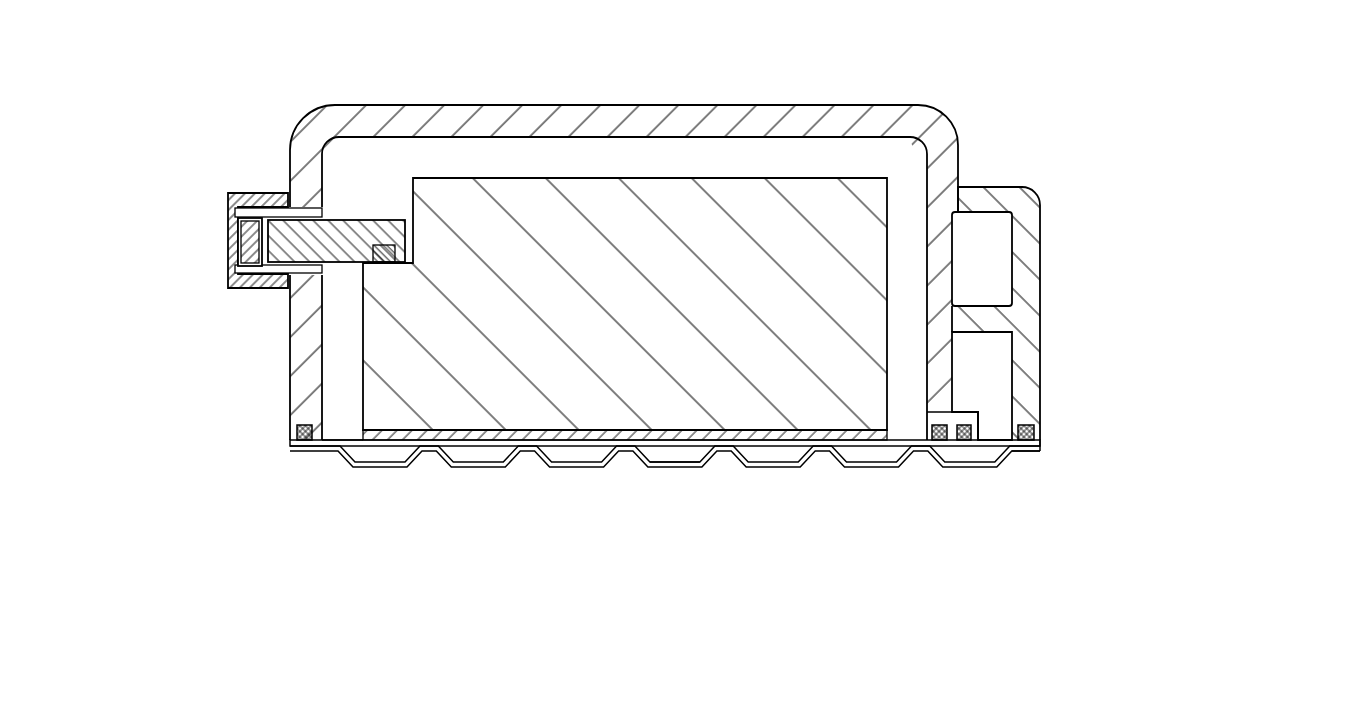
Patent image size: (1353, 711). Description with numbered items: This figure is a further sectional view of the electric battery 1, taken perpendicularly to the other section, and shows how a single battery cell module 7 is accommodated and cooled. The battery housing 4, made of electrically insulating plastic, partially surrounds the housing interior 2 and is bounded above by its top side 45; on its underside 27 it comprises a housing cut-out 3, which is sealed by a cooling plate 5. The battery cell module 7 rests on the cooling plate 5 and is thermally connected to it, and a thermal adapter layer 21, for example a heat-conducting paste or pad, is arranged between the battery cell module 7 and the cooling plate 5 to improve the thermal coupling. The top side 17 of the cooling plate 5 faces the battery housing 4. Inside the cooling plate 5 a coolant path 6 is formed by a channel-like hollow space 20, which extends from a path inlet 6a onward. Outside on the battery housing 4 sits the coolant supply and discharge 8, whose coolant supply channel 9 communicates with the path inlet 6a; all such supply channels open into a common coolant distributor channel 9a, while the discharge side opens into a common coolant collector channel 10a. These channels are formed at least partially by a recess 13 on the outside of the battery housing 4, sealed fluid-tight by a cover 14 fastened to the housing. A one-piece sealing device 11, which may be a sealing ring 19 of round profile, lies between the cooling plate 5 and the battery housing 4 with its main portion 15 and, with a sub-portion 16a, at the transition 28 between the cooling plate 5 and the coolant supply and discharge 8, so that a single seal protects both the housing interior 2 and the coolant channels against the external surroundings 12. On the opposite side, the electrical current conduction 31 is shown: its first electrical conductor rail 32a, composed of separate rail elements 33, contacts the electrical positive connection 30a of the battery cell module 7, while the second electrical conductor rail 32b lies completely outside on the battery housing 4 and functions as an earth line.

The electric battery 1 is at (1089, 137).
The housing interior 2 is at (637, 152).
The housing cut-out 3 is at (842, 457).
The battery housing 4 is at (788, 98).
The cooling plate 5 is at (655, 472).
The coolant path 6 is at (665, 483).
The path inlet 6a is at (1000, 458).
The battery cell module 7 is at (646, 296).
The coolant supply and discharge 8 is at (1010, 181).
The coolant supply channel 9 is at (1000, 414).
The coolant distributor channel 9a is at (991, 375).
The coolant collector channel 10a is at (998, 255).
The sealing device 11 is at (702, 475).
The external surroundings 12 is at (648, 41).
The recess 13 is at (1022, 275).
The cover 14 is at (1030, 315).
The main portion 15 is at (302, 452).
The sub-portion 16a is at (1036, 426).
The top side 17 is at (445, 430).
The sealing ring 19 is at (702, 475).
The hollow space 20 is at (967, 454).
The thermal adapter layer 21 is at (355, 436).
The underside 27 is at (322, 452).
The transition 28 is at (1042, 441).
The electrical positive connection 30a is at (372, 245).
The electrical current conduction 31 is at (246, 181).
The first electrical conductor rail 32a is at (264, 278).
The second electrical conductor rail 32b is at (236, 238).
The rail element 33 is at (268, 292).
The top side 45 is at (535, 104).